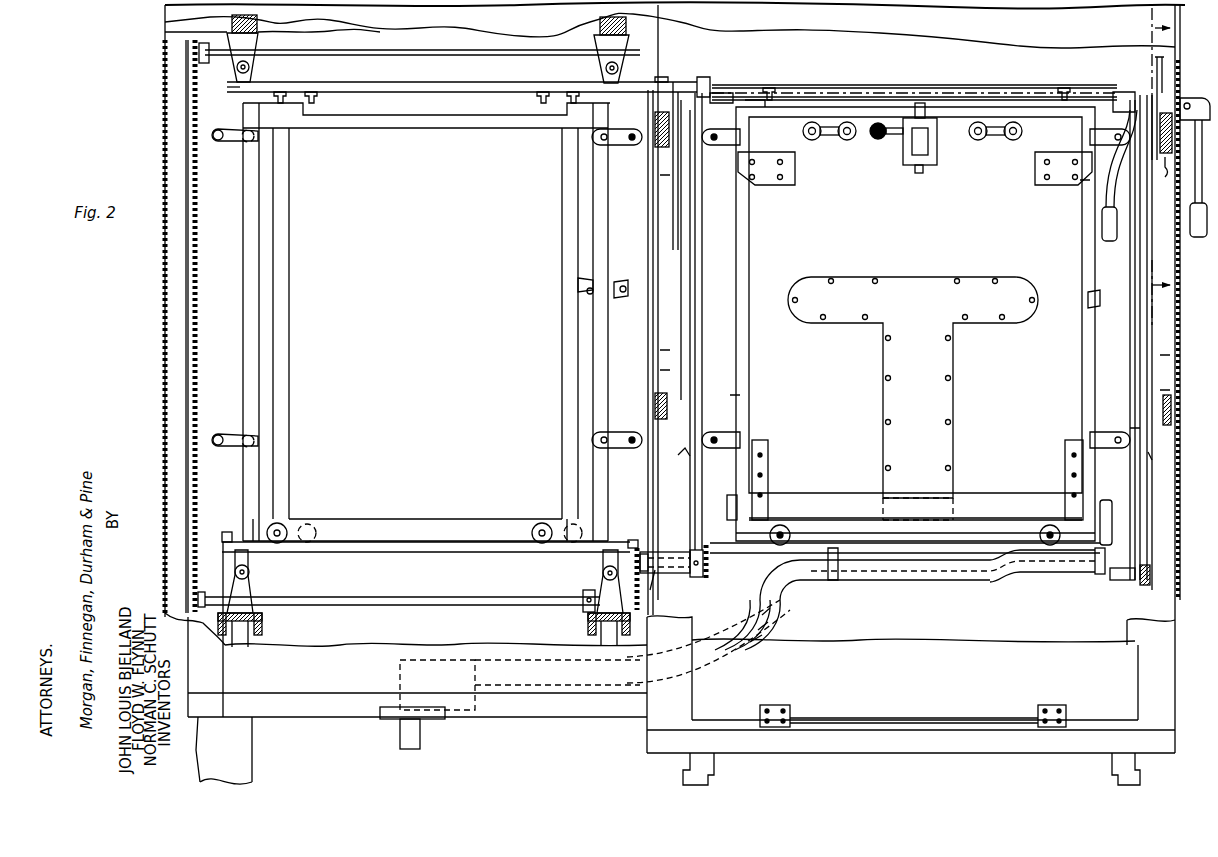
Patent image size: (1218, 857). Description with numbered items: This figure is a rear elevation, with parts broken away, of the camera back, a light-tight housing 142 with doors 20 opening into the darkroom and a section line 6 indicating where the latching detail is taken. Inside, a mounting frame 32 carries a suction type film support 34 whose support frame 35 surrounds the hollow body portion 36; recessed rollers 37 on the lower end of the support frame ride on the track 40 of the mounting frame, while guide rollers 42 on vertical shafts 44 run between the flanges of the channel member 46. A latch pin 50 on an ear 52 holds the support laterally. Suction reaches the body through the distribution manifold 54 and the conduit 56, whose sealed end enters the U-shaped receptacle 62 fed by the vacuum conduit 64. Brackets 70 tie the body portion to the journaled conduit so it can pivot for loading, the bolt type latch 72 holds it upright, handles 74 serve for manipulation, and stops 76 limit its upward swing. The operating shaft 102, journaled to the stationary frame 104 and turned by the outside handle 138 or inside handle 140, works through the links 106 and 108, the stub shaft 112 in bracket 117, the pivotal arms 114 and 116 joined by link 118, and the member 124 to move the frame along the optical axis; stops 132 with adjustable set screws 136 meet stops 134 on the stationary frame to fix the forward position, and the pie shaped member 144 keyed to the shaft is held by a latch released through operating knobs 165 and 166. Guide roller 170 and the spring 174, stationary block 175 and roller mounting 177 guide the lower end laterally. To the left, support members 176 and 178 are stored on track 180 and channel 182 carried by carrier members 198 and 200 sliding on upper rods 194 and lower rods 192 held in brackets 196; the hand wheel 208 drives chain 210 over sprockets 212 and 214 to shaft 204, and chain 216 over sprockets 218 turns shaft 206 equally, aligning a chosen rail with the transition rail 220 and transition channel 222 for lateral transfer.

The section line 6 is at (1152, 166).
The light-tight doors 20 is at (922, 655).
The mounting frame 32 is at (988, 85).
The suction type film support 34 is at (1048, 347).
The support frame 35 is at (935, 105).
The hollow body portion 36 is at (897, 248).
The recessed rollers 37 is at (290, 525).
The track 40 is at (778, 595).
The guide rollers 42 is at (290, 92).
The vertical shafts 44 is at (763, 100).
The channel member 46 is at (832, 88).
The latch pin 50 is at (585, 292).
The ear 52 is at (580, 284).
The distribution manifold 54 is at (892, 375).
The conduit 56 is at (965, 500).
The U-shaped receptacle 62 is at (1110, 530).
The vacuum conduit 64 is at (962, 585).
The brackets 70 is at (768, 458).
The bolt type latch 72 is at (930, 165).
The handles 74 is at (838, 140).
The stops 76 is at (790, 185).
The operating shaft 102 is at (725, 100).
The stationary frame 104 is at (585, 20).
The link 106 is at (663, 200).
The link 108 is at (684, 296).
The stub shaft 112 is at (660, 356).
The pivotal arm 114 is at (660, 180).
The pivotal arm 116 is at (735, 395).
The bracket 117 is at (660, 372).
The link 118 is at (700, 317).
The member 124 is at (705, 195).
The stops 132 is at (262, 142).
The stops 134 is at (680, 460).
The adjustable set screws 136 is at (218, 130).
The handle 138 is at (1187, 237).
The handle 140 is at (1103, 220).
The light-tight housing 142 is at (1160, 668).
The pie shaped member 144 is at (1155, 70).
The operating knob 165 is at (1183, 150).
The operating knob 166 is at (1166, 180).
The guide roller 170 is at (1130, 580).
The spring 174 is at (720, 650).
The stationary block 175 is at (755, 622).
The support member 176 is at (262, 282).
The roller mounting 177 is at (720, 665).
The support member 178 is at (292, 238).
The track 180 is at (410, 555).
The channel 182 is at (367, 88).
The lower rods 192 is at (249, 575).
The upper rods 194 is at (250, 68).
The brackets 196 is at (258, 42).
The carrier members 198 is at (227, 82).
The carrier members 200 is at (255, 568).
The shaft 204 is at (395, 605).
The shaft 206 is at (441, 50).
The hand wheel 208 is at (710, 580).
The chain 210 is at (655, 590).
The sprocket 212 is at (637, 545).
The sprocket 214 is at (585, 600).
The chain 216 is at (197, 345).
The sprockets 218 is at (199, 48).
The transition rail 220 is at (680, 560).
The transition channel 222 is at (683, 85).